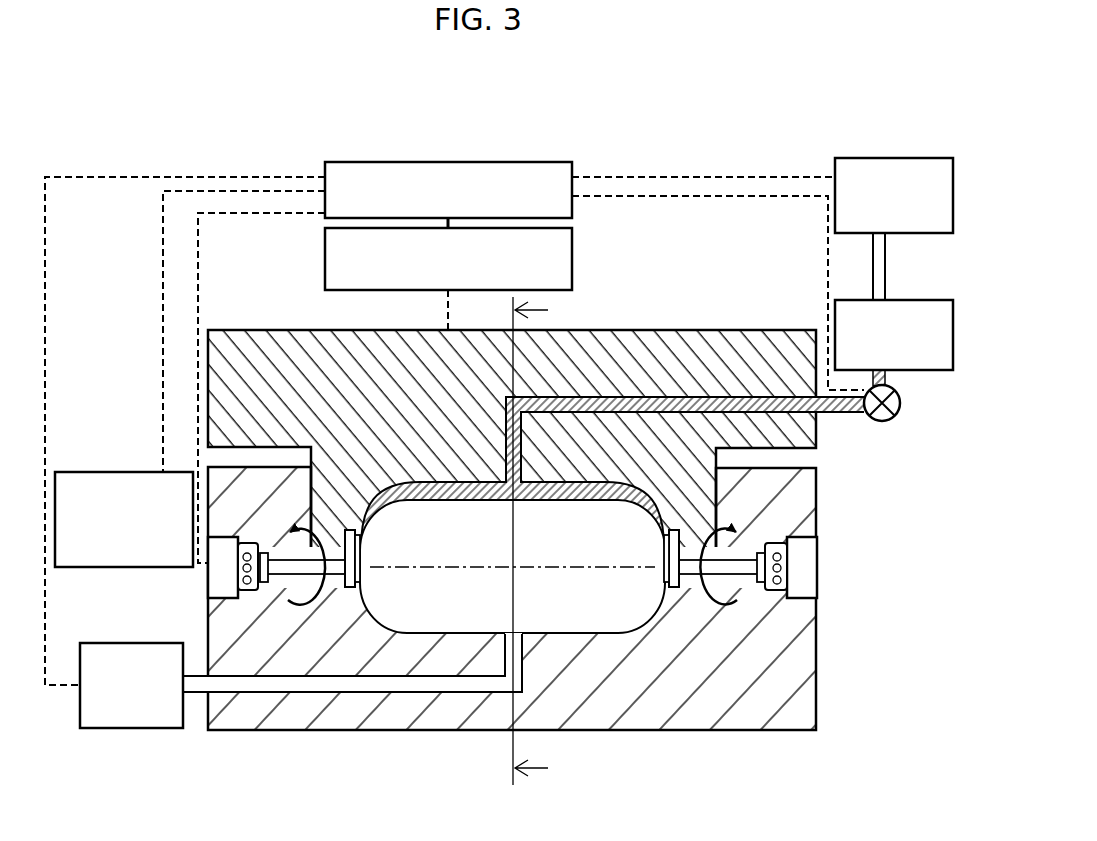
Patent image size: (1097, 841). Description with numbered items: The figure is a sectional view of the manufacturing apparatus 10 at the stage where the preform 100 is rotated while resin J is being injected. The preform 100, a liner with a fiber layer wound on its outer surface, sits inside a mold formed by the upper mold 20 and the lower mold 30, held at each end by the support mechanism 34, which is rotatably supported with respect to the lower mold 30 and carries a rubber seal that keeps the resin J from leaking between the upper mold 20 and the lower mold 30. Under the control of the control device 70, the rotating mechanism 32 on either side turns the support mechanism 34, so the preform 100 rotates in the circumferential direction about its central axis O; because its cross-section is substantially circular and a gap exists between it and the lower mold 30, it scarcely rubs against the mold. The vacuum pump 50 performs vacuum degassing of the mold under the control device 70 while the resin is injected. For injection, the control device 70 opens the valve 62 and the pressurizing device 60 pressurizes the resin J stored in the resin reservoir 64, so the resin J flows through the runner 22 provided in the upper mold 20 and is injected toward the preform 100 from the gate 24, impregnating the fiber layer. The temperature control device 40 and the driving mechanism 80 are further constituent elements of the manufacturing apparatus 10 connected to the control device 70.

The manufacturing apparatus 10 is at (878, 104).
The upper mold 20 is at (709, 343).
The runner 22 is at (666, 397).
The gate 24 is at (510, 483).
The lower mold 30 is at (775, 705).
The rotating mechanism 32 is at (215, 585).
The support mechanism 34 is at (338, 574).
The temperature control device 40 is at (117, 472).
The vacuum pump 50 is at (105, 643).
The pressurizing device 60 is at (833, 170).
The valve 62 is at (888, 418).
The resin reservoir 64 is at (913, 371).
The control device 70 is at (465, 162).
The driving mechanism 80 is at (325, 266).
The preform 100 is at (512, 645).
The resin J is at (420, 482).
The central axis O is at (435, 567).